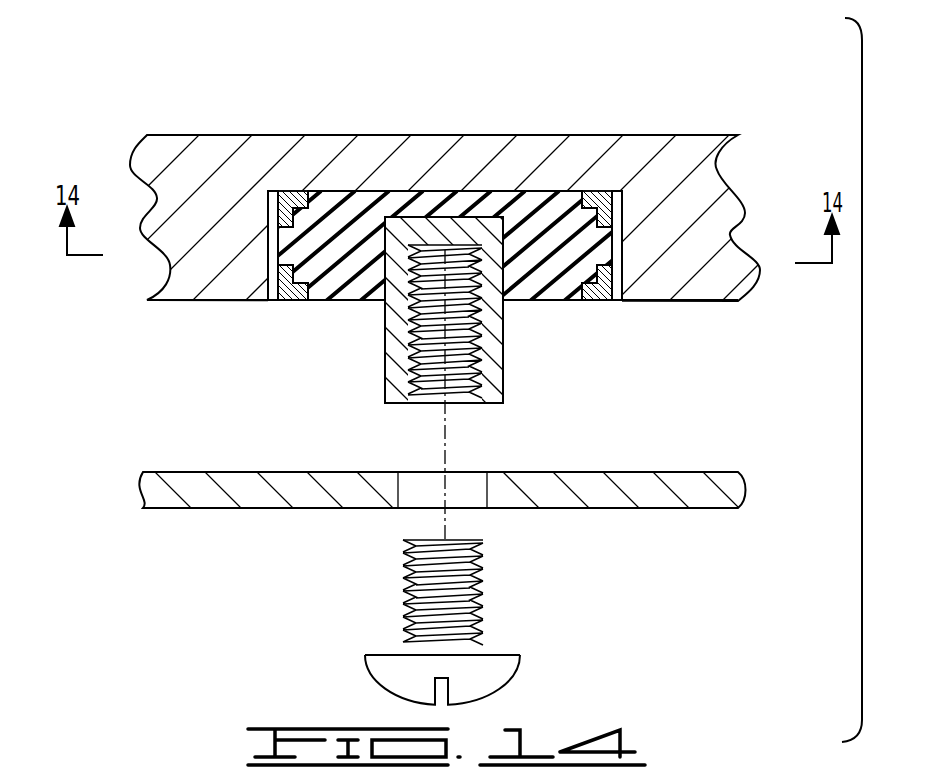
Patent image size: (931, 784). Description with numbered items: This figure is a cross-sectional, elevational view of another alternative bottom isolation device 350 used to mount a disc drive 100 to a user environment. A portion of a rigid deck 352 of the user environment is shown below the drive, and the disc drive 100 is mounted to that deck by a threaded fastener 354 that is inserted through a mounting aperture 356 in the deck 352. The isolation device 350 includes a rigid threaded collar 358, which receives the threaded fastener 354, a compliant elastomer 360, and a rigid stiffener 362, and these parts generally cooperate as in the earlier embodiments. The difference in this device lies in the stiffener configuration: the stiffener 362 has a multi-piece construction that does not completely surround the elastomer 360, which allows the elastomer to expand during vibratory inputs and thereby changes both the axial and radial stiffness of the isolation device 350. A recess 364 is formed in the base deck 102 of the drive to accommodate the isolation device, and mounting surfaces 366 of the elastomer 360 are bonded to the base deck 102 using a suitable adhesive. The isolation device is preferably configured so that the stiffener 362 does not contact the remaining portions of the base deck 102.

The disc drive 100 is at (198, 64).
The base deck 102 is at (578, 137).
The isolation device 350 is at (284, 321).
The rigid deck 352 is at (587, 481).
The threaded fastener 354 is at (398, 668).
The mounting aperture 356 is at (411, 449).
The rigid threaded collar 358 is at (498, 337).
The compliant elastomer 360 is at (352, 292).
The rigid stiffener 362 is at (598, 298).
The recess 364 is at (636, 253).
The mounting surfaces 366 is at (395, 178).